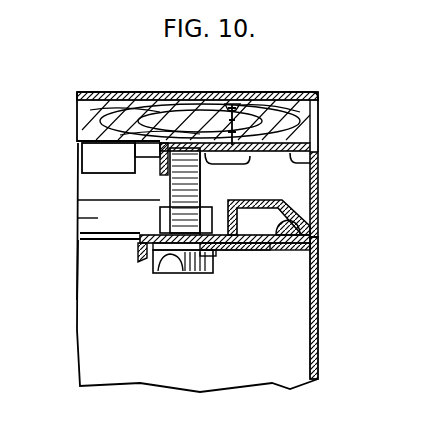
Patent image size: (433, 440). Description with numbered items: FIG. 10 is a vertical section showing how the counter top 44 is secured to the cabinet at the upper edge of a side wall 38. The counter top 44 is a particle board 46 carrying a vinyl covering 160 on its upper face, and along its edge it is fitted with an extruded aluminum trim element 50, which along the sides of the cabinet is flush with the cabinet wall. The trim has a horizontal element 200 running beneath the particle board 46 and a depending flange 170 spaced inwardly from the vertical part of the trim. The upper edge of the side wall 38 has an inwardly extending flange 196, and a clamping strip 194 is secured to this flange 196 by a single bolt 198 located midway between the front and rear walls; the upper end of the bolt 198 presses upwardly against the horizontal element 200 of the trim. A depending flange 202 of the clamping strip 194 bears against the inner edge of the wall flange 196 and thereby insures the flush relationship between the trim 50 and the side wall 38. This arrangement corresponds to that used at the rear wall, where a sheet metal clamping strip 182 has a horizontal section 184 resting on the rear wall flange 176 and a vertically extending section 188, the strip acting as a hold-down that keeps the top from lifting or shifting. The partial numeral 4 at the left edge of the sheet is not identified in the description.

The vinyl covering 160 is at (134, 77).
The counter top 44 is at (204, 78).
The particle board 46 is at (268, 100).
The horizontal element 200 is at (316, 153).
The trim element 50 is at (320, 192).
The wall 38 is at (318, 340).
The depending flange 170 is at (100, 158).
The sheet metal clamping strip 182 is at (96, 205).
The vertically extending section 188 is at (98, 218).
The horizontal section 184 is at (98, 237).
The flange 176 is at (97, 256).
The bolt 198 is at (170, 177).
The clamping strip 194 is at (222, 233).
The flange 196 is at (250, 248).
The depending flange 202 is at (134, 258).
The partial numeral 4 is at (3, 189).